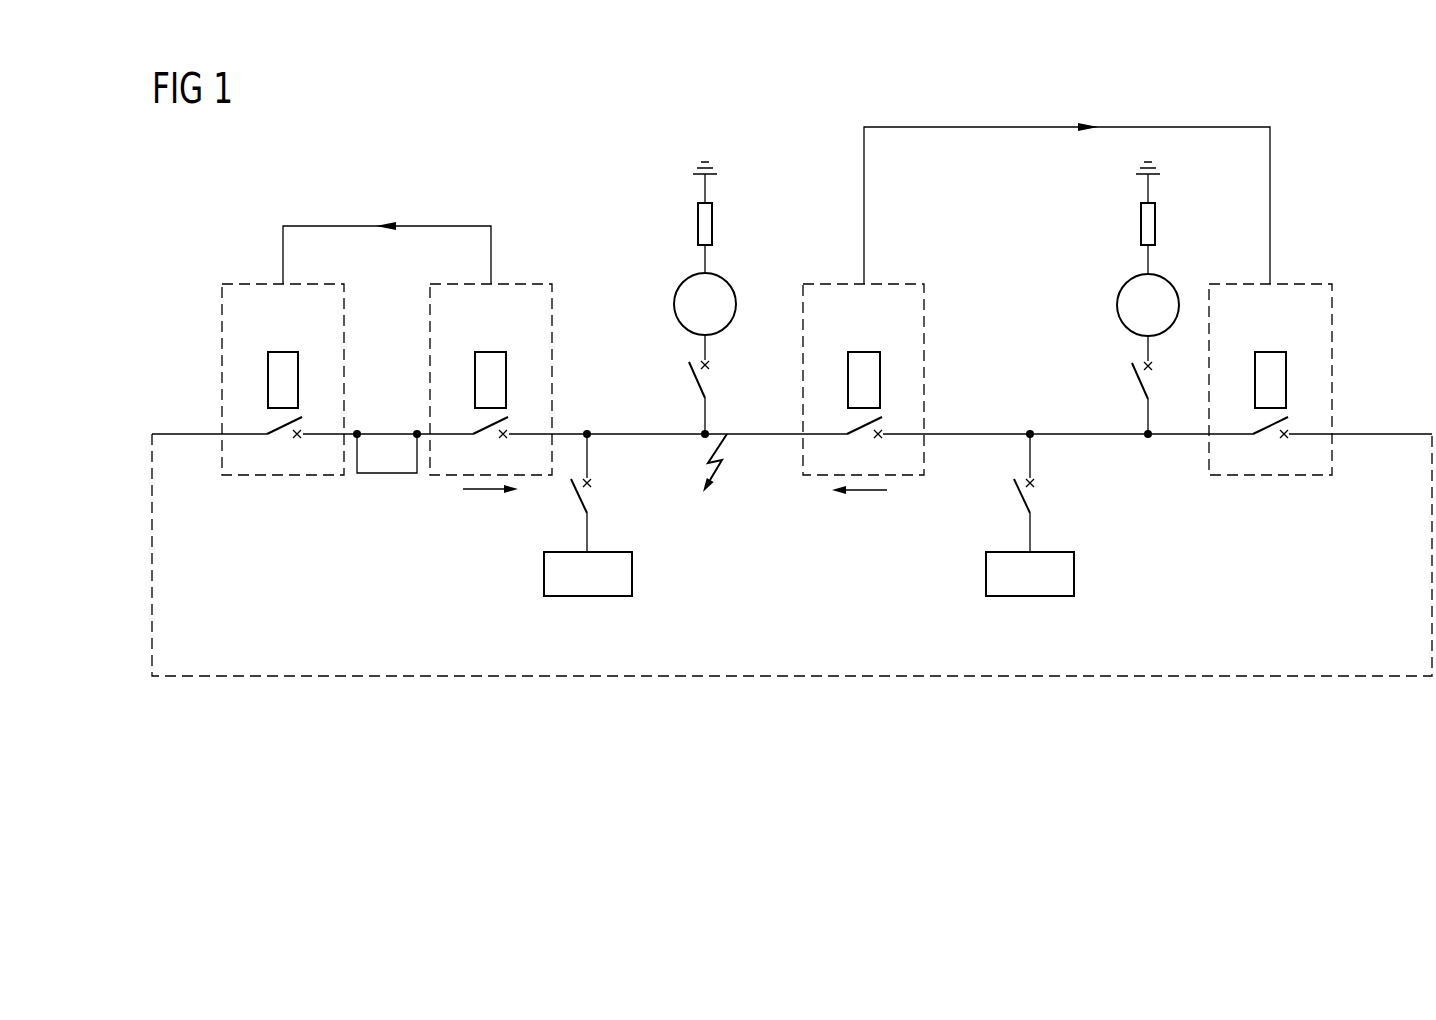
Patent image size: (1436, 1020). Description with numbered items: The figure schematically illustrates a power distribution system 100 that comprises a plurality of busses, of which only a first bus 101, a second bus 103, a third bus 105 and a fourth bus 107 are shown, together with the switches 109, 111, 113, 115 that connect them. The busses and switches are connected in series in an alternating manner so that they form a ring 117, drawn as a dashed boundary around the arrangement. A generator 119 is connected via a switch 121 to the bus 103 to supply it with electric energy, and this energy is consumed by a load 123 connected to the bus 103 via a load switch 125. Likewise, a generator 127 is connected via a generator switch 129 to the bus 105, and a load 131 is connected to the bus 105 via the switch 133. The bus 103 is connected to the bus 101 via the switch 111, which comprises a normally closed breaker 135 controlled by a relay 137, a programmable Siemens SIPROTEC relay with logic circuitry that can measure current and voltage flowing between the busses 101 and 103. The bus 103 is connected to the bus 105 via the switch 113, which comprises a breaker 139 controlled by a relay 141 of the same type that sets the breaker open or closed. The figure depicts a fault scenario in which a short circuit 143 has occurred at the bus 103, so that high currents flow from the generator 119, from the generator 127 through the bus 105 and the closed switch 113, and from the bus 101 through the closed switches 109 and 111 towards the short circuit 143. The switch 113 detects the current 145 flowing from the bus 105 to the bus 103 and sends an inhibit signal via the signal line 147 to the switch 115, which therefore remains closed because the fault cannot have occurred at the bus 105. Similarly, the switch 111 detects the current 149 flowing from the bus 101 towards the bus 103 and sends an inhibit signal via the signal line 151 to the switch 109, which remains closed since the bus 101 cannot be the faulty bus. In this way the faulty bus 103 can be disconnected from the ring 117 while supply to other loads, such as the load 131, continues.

The power distribution system 100 is at (1368, 124).
The first bus 101 is at (202, 439).
The second bus 103 is at (652, 435).
The third bus 105 is at (1093, 435).
The fourth bus 107 is at (1393, 437).
The switch 109 is at (250, 282).
The switch 111 is at (495, 350).
The switch 113 is at (868, 349).
The switch 115 is at (1300, 285).
The ring 117 is at (1217, 675).
The generator 119 is at (675, 304).
The switch 121 is at (693, 380).
The load 123 is at (583, 598).
The load switch 125 is at (573, 505).
The generator 127 is at (1118, 304).
The generator switch 129 is at (1133, 380).
The load 131 is at (1026, 598).
The switch 133 is at (1022, 498).
The breaker 135 is at (477, 418).
The relay 137 is at (506, 380).
The breaker 139 is at (857, 422).
The relay 141 is at (880, 375).
The short circuit 143 is at (720, 462).
The current 145 is at (870, 493).
The signal line 147 is at (1026, 127).
The current 149 is at (480, 492).
The signal line 151 is at (348, 225).